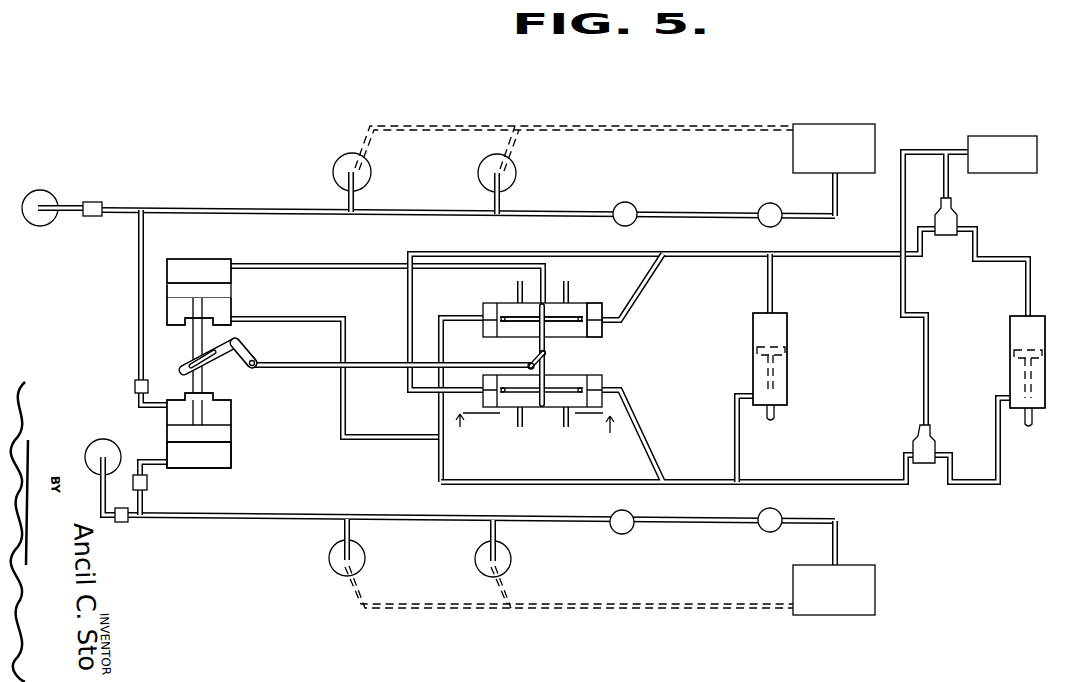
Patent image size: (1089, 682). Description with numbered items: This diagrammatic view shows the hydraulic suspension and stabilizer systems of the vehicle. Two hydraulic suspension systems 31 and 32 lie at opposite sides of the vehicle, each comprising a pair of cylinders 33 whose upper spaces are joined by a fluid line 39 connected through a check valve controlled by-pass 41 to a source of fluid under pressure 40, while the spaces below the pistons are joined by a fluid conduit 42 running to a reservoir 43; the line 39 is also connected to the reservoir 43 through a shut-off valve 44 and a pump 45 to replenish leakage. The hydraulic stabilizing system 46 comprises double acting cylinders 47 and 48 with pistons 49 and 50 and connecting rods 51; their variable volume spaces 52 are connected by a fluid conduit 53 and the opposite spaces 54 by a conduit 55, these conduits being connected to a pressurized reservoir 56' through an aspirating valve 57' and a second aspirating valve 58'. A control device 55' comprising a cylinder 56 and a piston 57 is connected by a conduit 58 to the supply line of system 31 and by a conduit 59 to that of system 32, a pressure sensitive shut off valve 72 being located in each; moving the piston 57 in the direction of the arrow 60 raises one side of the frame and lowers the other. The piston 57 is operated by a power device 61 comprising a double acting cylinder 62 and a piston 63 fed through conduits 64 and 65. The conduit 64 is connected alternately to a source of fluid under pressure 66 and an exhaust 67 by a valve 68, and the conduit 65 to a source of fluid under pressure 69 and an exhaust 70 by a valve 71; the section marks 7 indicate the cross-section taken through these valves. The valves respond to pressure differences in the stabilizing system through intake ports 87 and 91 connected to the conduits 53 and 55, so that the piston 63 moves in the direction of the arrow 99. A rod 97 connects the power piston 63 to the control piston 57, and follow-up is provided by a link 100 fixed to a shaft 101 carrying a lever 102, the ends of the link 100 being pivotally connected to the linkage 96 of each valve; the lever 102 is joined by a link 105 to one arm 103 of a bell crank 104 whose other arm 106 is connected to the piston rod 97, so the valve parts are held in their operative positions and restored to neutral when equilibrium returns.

The section line 7- 7 is at (537, 427).
The hydraulic suspension system 31 is at (535, 515).
The hydraulic suspension system 32 is at (418, 200).
The cylinders 33 is at (370, 166).
The fluid line 39 is at (249, 206).
The source of fluid under pressure 40 is at (47, 192).
The check valve controlled by-pass 41 is at (96, 217).
The fluid conduit 42 is at (623, 127).
The reservoir 43 is at (851, 136).
The shut-off valve 44 is at (636, 210).
The pump 45 is at (780, 226).
The hydraulic stabilizing system 46 is at (732, 496).
The double acting hydraulic cylinder 47 is at (753, 376).
The double acting hydraulic cylinder 48 is at (1045, 381).
The piston 49 is at (787, 352).
The piston 50 is at (1013, 355).
The connecting rods 51 is at (776, 414).
The variable volume spaces 52 is at (787, 326).
The fluid conduit 53 is at (833, 258).
The variable volume spaces 54 is at (787, 390).
The conduit 55 is at (734, 436).
The control device 55' is at (232, 430).
The cylinder 56 is at (199, 472).
The pressurized reservoir 56' is at (978, 268).
The piston 57 is at (208, 468).
The aspirating valve 57' is at (970, 213).
The conduit 58 is at (147, 449).
The second aspirating valve 58' is at (902, 444).
The conduit 59 is at (139, 315).
The arrow 60 is at (244, 437).
The power device 61 is at (246, 242).
The double acting cylinder 62 is at (232, 275).
The piston 63 is at (232, 291).
The conduit 64 is at (355, 266).
The conduit 65 is at (306, 318).
The source of fluid under pressure 66 is at (570, 290).
The exhaust 67 is at (518, 290).
The valve 68 is at (572, 331).
The source of fluid under pressure 69 is at (568, 427).
The exhaust 70 is at (517, 422).
The valve 71 is at (589, 374).
The pressure sensitive shut off valve 72 is at (134, 387).
The intake port 87 is at (612, 323).
The intake port 91 is at (476, 316).
The linkage 96 is at (553, 316).
The rod 97 is at (194, 338).
The arrow 99 is at (159, 289).
The link 100 is at (538, 340).
The shaft 101 is at (548, 355).
The lever 102 is at (528, 366).
The arm 103 is at (255, 358).
The bell crank 104 is at (237, 342).
The link 105 is at (388, 362).
The arm 106 is at (185, 369).